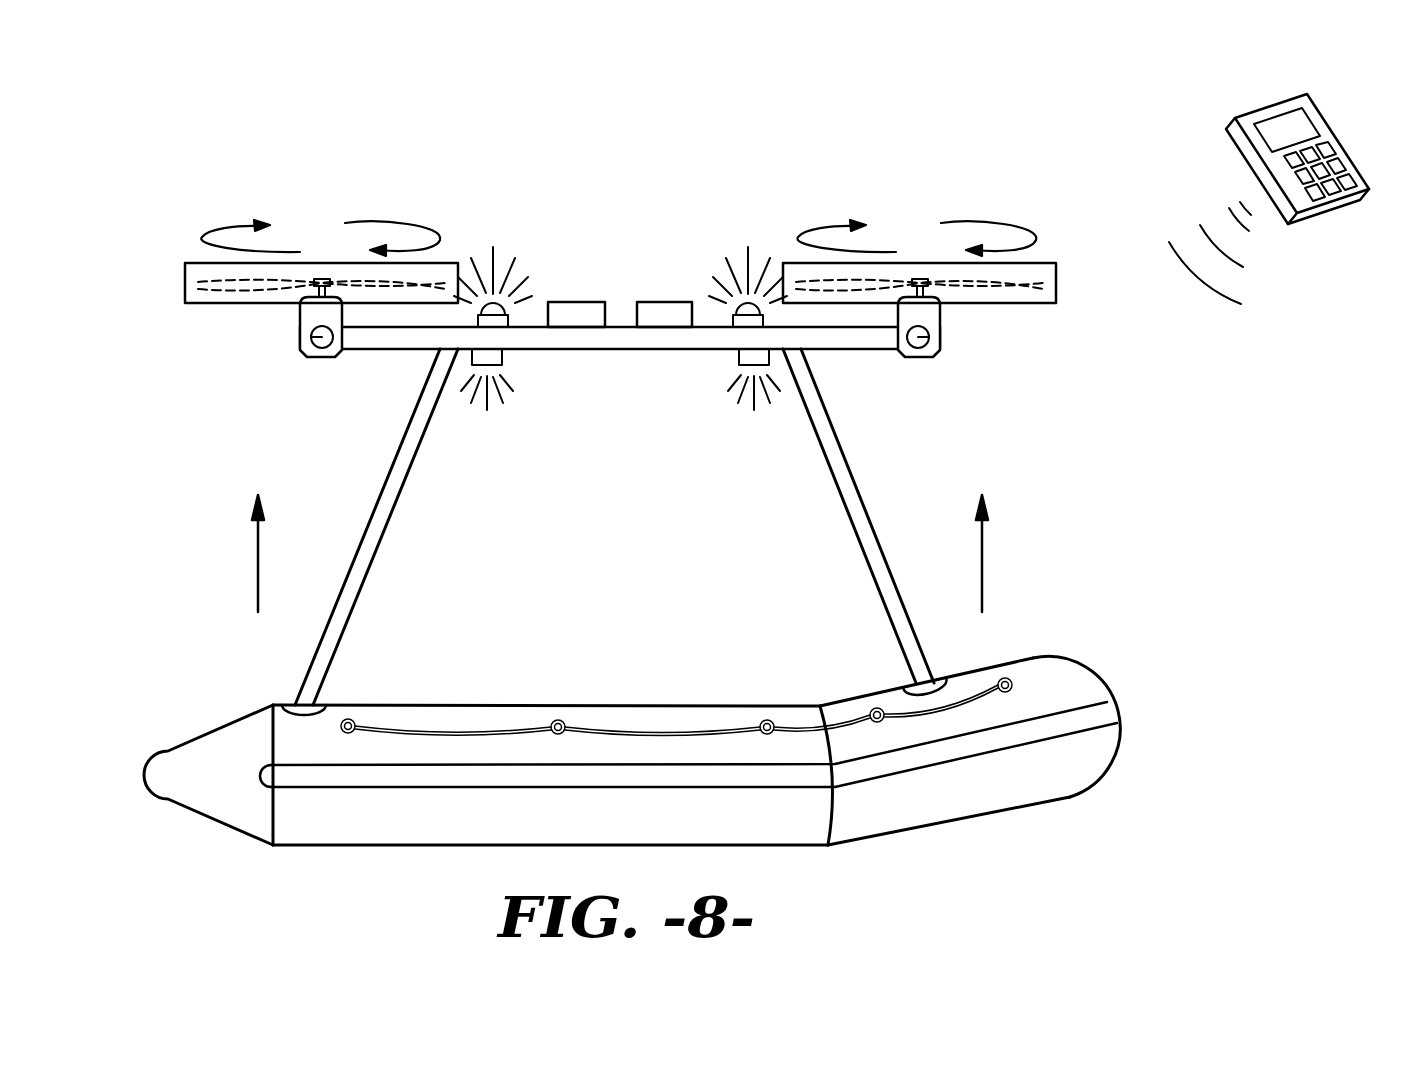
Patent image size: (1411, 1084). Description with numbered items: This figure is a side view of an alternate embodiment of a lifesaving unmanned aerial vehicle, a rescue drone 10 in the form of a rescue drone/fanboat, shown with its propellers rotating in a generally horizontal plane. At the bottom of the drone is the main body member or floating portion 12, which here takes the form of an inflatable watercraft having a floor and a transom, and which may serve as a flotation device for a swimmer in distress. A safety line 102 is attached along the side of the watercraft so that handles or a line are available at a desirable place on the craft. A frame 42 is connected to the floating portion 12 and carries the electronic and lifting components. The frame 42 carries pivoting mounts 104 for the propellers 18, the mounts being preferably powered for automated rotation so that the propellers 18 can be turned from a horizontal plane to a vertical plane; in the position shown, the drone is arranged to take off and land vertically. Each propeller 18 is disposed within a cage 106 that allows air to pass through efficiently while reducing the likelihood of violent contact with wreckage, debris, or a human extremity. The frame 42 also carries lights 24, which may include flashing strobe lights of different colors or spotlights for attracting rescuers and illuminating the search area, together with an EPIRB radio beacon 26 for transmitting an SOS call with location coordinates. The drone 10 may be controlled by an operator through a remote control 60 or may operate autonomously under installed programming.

The rescue drone 10 is at (434, 162).
The floating portion 12 is at (1055, 675).
The propeller 18 is at (212, 280).
The lights 24 is at (505, 318).
The EPIRB radio beacon 26 is at (580, 302).
The frame 42 is at (851, 506).
The remote control 60 is at (1337, 125).
The safety line 102 is at (443, 728).
The pivoting mounts 104 is at (308, 338).
The cage 106 is at (183, 290).